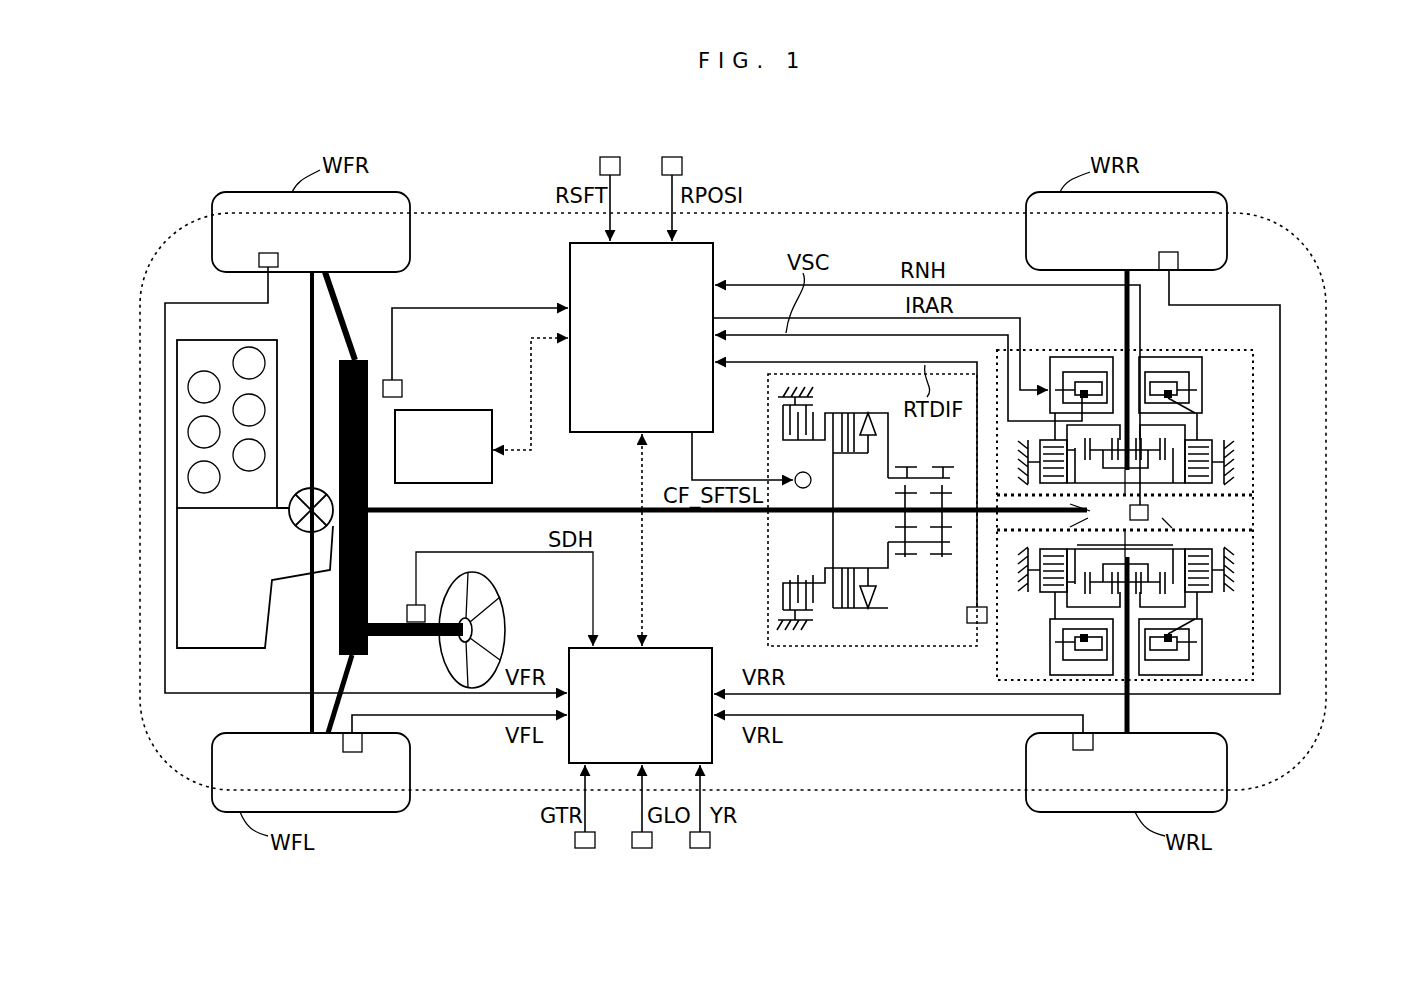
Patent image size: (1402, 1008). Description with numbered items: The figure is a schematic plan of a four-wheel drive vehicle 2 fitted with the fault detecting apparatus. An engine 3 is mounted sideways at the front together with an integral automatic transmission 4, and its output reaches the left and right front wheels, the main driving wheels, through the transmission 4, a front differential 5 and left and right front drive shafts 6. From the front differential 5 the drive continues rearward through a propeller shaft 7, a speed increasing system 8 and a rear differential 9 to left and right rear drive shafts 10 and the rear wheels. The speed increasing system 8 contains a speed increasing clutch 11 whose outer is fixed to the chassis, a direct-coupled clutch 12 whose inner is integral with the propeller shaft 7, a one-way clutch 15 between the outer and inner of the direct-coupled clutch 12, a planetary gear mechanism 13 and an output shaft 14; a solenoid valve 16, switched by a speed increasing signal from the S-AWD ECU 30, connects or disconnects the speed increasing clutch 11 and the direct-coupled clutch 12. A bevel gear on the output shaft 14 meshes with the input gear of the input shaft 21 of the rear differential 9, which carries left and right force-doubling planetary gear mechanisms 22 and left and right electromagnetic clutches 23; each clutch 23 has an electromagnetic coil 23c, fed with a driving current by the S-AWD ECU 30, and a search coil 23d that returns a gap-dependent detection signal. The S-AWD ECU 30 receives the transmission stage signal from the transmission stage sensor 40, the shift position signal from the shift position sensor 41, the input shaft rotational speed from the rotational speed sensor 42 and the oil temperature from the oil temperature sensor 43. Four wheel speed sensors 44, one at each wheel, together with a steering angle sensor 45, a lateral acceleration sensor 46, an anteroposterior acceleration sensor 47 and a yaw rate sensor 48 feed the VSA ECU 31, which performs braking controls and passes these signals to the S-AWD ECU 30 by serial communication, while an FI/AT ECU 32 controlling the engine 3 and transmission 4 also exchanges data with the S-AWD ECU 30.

The four-wheel drive vehicle 2 is at (920, 212).
The engine 3 is at (177, 410).
The automatic transmission 4 is at (177, 620).
The front differential 5 is at (293, 520).
The front drive shaft 6 is at (310, 323).
The propeller shaft 7 is at (540, 507).
The speed increasing system 8 is at (767, 562).
The rear differential 9 is at (1210, 349).
The rear drive shaft 10 is at (1122, 318).
The speed increasing clutch 11 is at (781, 428).
The direct-coupled clutch 12 is at (848, 613).
The planetary gear mechanism 13 is at (928, 566).
The output shaft 14 is at (968, 507).
The one-way clutch 15 is at (872, 610).
The solenoid valve 16 is at (798, 477).
The input shaft 21 is at (1130, 538).
The planetary gear mechanism 22 is at (1190, 487).
The electromagnetic clutch 23 is at (1203, 380).
The electromagnetic coil 23c is at (1164, 388).
The search coil 23d is at (1203, 418).
The S-AWD ECU 30 is at (570, 258).
The VSA ECU 31 is at (712, 757).
The FI/AT ECU 32 is at (462, 410).
The transmission stage sensor 40 is at (604, 157).
The shift position sensor 41 is at (676, 157).
The input shaft rotational speed sensor 42 is at (1150, 512).
The oil temperature sensor 43 is at (977, 623).
The wheel speed sensor 44 is at (270, 253).
The steering angle sensor 45 is at (412, 605).
The lateral acceleration sensor 46 is at (582, 848).
The anteroposterior acceleration sensor 47 is at (645, 848).
The yaw rate sensor 48 is at (703, 848).